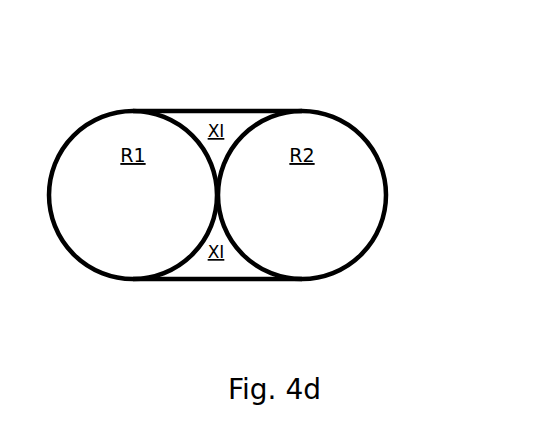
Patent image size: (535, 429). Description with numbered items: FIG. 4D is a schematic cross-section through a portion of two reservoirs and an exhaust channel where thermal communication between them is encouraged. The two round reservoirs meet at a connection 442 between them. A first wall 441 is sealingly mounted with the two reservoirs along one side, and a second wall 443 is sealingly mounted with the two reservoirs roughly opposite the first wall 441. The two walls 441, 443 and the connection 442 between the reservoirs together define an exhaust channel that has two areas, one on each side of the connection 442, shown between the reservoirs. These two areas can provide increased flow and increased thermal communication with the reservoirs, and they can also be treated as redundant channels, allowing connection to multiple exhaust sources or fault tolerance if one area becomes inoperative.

The first wall 441 is at (243, 67).
The connection 442 is at (341, 209).
The second wall 443 is at (242, 311).